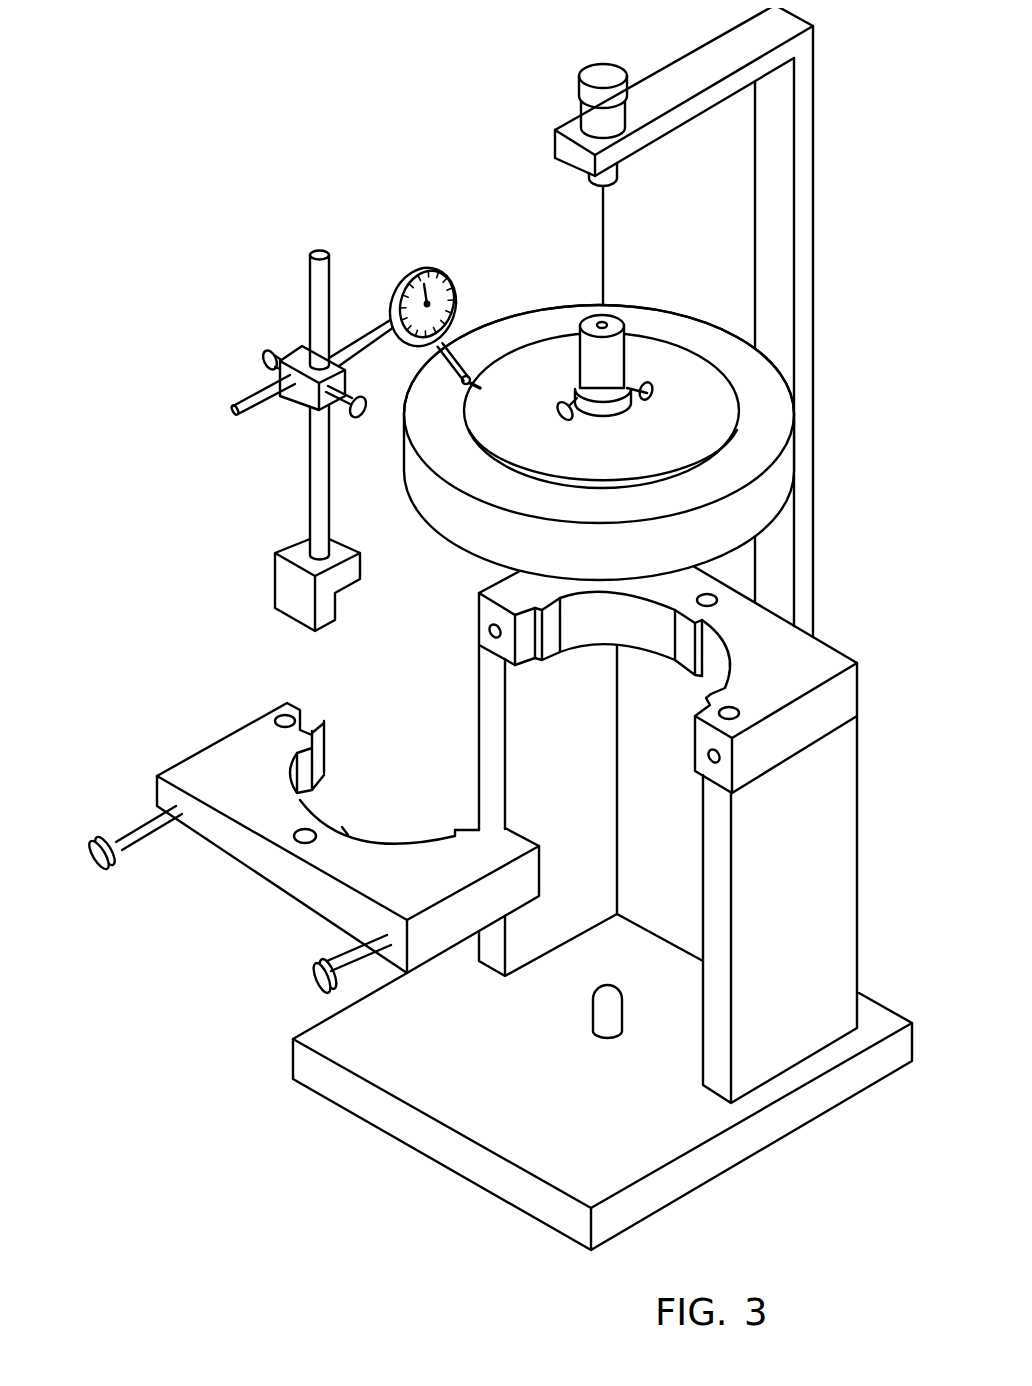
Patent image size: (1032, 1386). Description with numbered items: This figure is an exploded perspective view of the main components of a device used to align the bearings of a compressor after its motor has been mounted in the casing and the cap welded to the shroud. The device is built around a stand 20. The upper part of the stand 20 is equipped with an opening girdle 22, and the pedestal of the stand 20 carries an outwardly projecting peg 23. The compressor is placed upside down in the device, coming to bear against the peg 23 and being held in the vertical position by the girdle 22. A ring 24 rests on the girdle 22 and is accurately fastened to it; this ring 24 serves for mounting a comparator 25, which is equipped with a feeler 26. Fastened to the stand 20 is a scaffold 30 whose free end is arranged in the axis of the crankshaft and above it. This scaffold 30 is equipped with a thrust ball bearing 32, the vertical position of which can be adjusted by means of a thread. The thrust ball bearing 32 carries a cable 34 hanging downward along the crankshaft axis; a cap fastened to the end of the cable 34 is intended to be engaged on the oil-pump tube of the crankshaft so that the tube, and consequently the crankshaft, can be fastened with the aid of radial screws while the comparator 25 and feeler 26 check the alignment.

The stand 20 is at (830, 868).
The opening girdle 22 is at (310, 880).
The peg 23 is at (609, 1004).
The ring 24 is at (490, 525).
The comparator 25 is at (428, 270).
The feeler 26 is at (477, 380).
The vertical column 30 is at (802, 305).
The thrust ball bearing 32 is at (597, 118).
The cable 34 is at (600, 220).